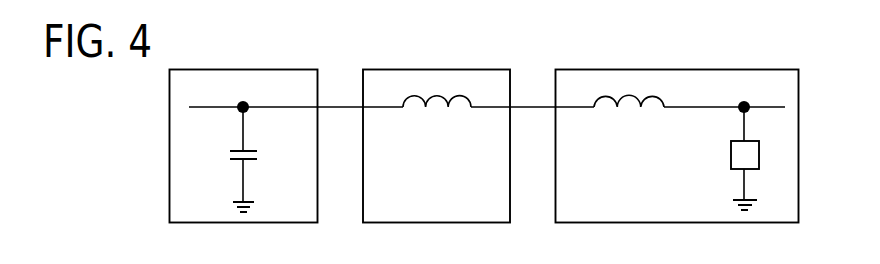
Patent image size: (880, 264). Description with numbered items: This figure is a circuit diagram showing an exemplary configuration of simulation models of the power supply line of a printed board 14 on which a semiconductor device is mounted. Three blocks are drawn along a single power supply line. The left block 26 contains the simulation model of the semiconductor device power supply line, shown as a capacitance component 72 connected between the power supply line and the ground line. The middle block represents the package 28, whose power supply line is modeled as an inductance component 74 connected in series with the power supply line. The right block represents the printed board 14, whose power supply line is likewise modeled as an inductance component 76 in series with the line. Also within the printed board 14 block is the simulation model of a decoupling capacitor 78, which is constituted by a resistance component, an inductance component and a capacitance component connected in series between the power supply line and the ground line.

The printed board 14 is at (692, 67).
The first filter stage (shunt capacitor block) 26 is at (258, 68).
The package 28 is at (457, 67).
The capacitance component 72 is at (248, 148).
The inductance component 74 is at (437, 98).
The inductance component 76 is at (632, 96).
The decoupling capacitor 78 is at (728, 155).